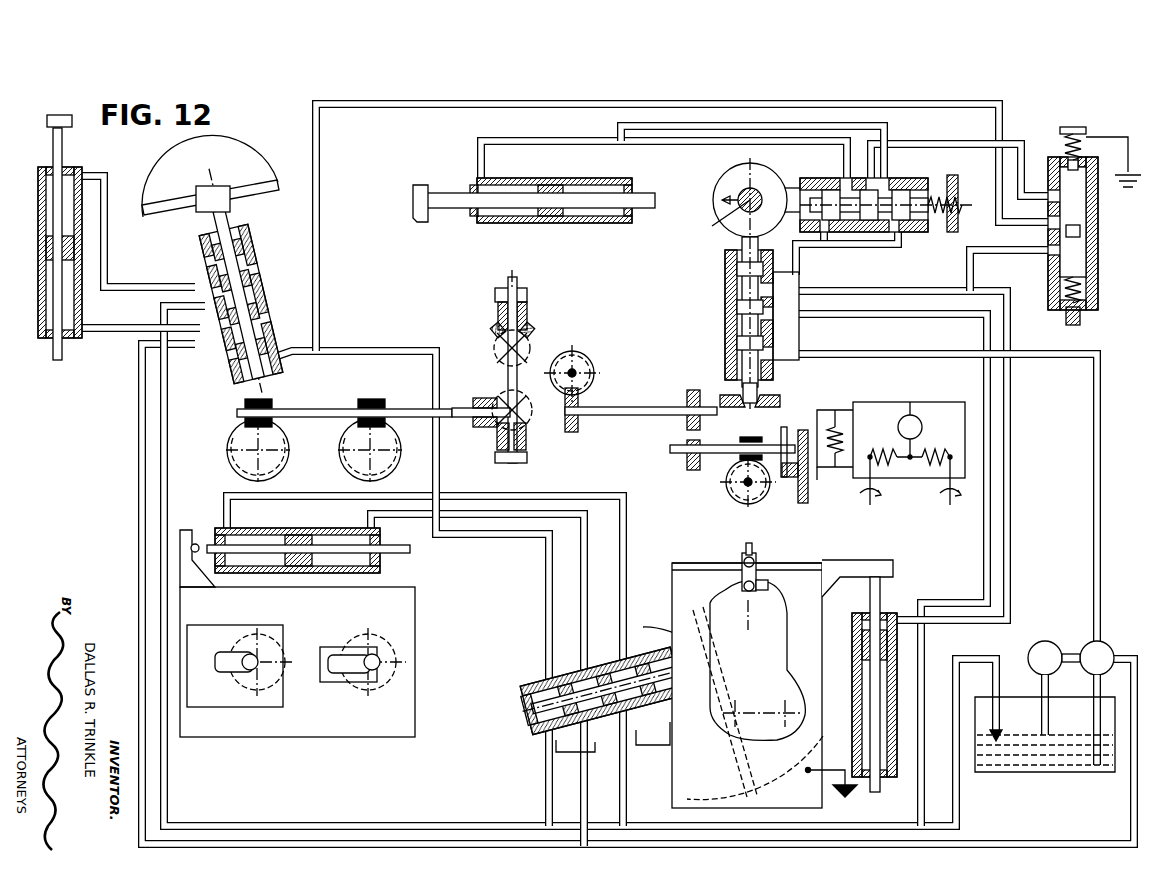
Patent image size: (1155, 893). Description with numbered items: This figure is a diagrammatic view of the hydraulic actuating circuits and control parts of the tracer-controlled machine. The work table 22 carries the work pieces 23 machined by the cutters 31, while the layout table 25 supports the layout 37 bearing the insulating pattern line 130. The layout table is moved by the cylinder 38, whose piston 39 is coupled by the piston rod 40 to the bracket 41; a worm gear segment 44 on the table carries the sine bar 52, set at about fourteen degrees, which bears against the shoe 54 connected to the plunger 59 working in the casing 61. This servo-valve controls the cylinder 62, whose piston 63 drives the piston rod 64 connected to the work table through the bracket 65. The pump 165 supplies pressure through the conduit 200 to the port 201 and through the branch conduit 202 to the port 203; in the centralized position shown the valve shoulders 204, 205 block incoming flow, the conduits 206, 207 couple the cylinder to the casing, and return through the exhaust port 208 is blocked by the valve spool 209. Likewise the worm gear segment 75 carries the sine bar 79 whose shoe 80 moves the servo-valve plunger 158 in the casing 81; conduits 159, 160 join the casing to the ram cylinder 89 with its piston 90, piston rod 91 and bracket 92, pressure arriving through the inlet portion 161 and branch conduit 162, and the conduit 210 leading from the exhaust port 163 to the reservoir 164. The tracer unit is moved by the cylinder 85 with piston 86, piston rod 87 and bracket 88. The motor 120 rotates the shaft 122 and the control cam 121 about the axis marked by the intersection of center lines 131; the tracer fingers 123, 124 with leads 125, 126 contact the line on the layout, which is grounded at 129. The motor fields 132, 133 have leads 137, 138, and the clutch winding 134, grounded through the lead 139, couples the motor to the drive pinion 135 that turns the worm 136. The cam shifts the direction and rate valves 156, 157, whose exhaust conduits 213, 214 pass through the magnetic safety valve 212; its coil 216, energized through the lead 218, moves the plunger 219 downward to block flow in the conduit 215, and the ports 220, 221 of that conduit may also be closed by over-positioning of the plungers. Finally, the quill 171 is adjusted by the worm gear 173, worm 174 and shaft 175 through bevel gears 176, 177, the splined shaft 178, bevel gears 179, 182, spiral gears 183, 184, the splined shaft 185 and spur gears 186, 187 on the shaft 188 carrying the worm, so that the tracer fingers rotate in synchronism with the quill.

The table 22 is at (410, 608).
The work piece 23 is at (340, 648).
The layout or pattern supporting table 25 is at (785, 562).
The cutter 31 is at (248, 654).
The layout or pattern 37 is at (680, 580).
The cylinder 38 is at (900, 667).
The piston 39 is at (852, 640).
The piston rod 40 is at (870, 612).
The bracket 41 is at (882, 563).
The worm gear segment 44 is at (697, 575).
The sine bar 52 is at (667, 630).
The shoe 54 is at (712, 676).
The plunger 59 is at (528, 703).
The casing 61 is at (532, 676).
The hydraulic actuating cylinder 62 is at (268, 534).
The piston 63 is at (302, 534).
The piston rod 64 is at (402, 553).
The bracket 65 is at (186, 530).
The worm gear segment 75 is at (252, 158).
The sine bar surface 79 is at (162, 195).
The shoe 80 is at (232, 205).
The casing 81 is at (258, 264).
The hydraulic cylinder 85 is at (597, 224).
The piston 86 is at (548, 224).
The piston rod 87 is at (458, 210).
The bracket 88 is at (414, 194).
The hydraulic cylinder 89 is at (40, 272).
The piston 90 is at (40, 243).
The piston rod 91 is at (55, 345).
The bracket 92 is at (48, 122).
The motor 120 is at (925, 402).
The tracer control cam 121 is at (715, 186).
The shaft 122 is at (712, 228).
The tracer finger 123 is at (745, 558).
The tracer finger 124 is at (752, 545).
The lead 125 is at (740, 560).
The lead 126 is at (768, 582).
The ground 129 is at (858, 790).
The pattern line 130 is at (780, 606).
The intersection of center lines 131 is at (747, 556).
The field 132 is at (932, 450).
The field 133 is at (884, 450).
The winding 134 is at (832, 408).
The drive pinion 135 is at (803, 428).
The worm 136 is at (748, 438).
The lead 137 is at (950, 505).
The lead 138 is at (870, 505).
The lead 139 is at (820, 482).
The valve 156 is at (905, 178).
The valve 157 is at (724, 294).
The servo-valve plunger 158 is at (240, 237).
The conduit 159 is at (155, 288).
The conduit 160 is at (105, 330).
The first inlet portion 161 is at (180, 344).
The branch conduit 162 is at (205, 262).
The exhaust port 163 is at (260, 287).
The reservoir 164 is at (1070, 770).
The pump 165 is at (1088, 645).
The quill 171 is at (268, 640).
The worm gear 173 is at (342, 456).
The worm 174 is at (270, 400).
The shaft 175 is at (324, 408).
The bevel gear 176 is at (497, 408).
The bevel gear 177 is at (497, 440).
The horizontal splined shaft 178 is at (505, 358).
The bevel gear 179 is at (497, 316).
The bevel gear 182 is at (528, 338).
The spiral gear 183 is at (585, 355).
The spiral gear 184 is at (580, 398).
The splined shaft 185 is at (648, 406).
The spur gear 186 is at (692, 388).
The spur gear 187 is at (686, 460).
The shaft 188 is at (724, 478).
The pressure conduit 200 is at (512, 846).
The port 201 is at (570, 722).
The branch conduit 202 is at (640, 730).
The port 203 is at (672, 722).
The valve shoulder 204 is at (566, 672).
The valve shoulder 205 is at (628, 625).
The conduit 206 is at (532, 496).
The conduit 207 is at (500, 512).
The exhaust port 208 is at (625, 715).
The valve spool 209 is at (585, 665).
The conduit 210 is at (167, 310).
The magnetic safety valve 212 is at (1098, 247).
The exhaust conduit 213 is at (975, 145).
The exhaust conduit 214 is at (970, 268).
The conduit 215 is at (897, 103).
The coil 216 is at (1062, 150).
The lead 218 is at (1127, 137).
The plunger 219 is at (1080, 186).
The port 220 is at (275, 345).
The port 221 is at (545, 665).